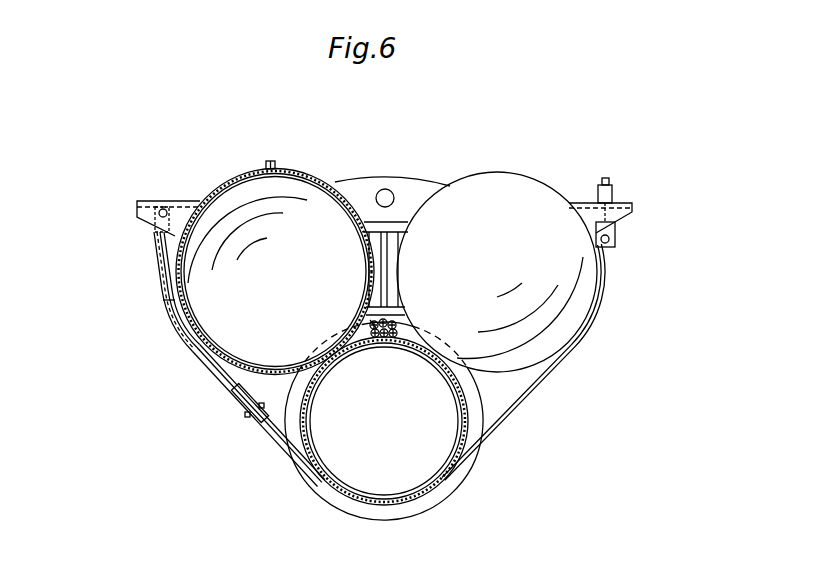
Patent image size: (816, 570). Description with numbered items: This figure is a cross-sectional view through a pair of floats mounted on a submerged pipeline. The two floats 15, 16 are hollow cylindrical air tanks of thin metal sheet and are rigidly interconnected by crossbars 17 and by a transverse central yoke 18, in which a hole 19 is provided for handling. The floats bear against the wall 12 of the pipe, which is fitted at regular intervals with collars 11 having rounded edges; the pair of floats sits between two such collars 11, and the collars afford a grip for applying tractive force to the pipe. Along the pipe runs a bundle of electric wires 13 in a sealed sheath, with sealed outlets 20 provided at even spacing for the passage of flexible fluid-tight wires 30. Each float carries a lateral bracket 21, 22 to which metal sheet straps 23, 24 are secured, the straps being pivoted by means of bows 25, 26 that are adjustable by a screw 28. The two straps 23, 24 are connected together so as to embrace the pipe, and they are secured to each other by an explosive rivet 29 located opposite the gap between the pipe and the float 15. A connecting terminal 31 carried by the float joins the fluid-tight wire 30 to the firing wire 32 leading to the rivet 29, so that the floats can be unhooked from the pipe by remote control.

The collar 11 is at (320, 481).
The wall 12 is at (446, 476).
The bundle of electric wires 13 is at (400, 331).
The float 15 is at (228, 383).
The float 16 is at (468, 195).
The crossbar 17 is at (388, 266).
The transverse central yoke 18 is at (357, 183).
The hole 19 is at (390, 192).
The sealed outlet 20 is at (372, 325).
The lateral bracket 21 is at (152, 210).
The lateral bracket 22 is at (628, 207).
The metal sheet strap 23 is at (208, 366).
The metal sheet strap 24 is at (512, 410).
The bow 25 is at (158, 241).
The bow 26 is at (615, 242).
The screw 28 is at (598, 198).
The explosive rivet 29 is at (255, 422).
The flexible fluid-tight wire 30 is at (288, 170).
The connecting terminal 31 is at (265, 165).
The firing wire 32 is at (161, 296).